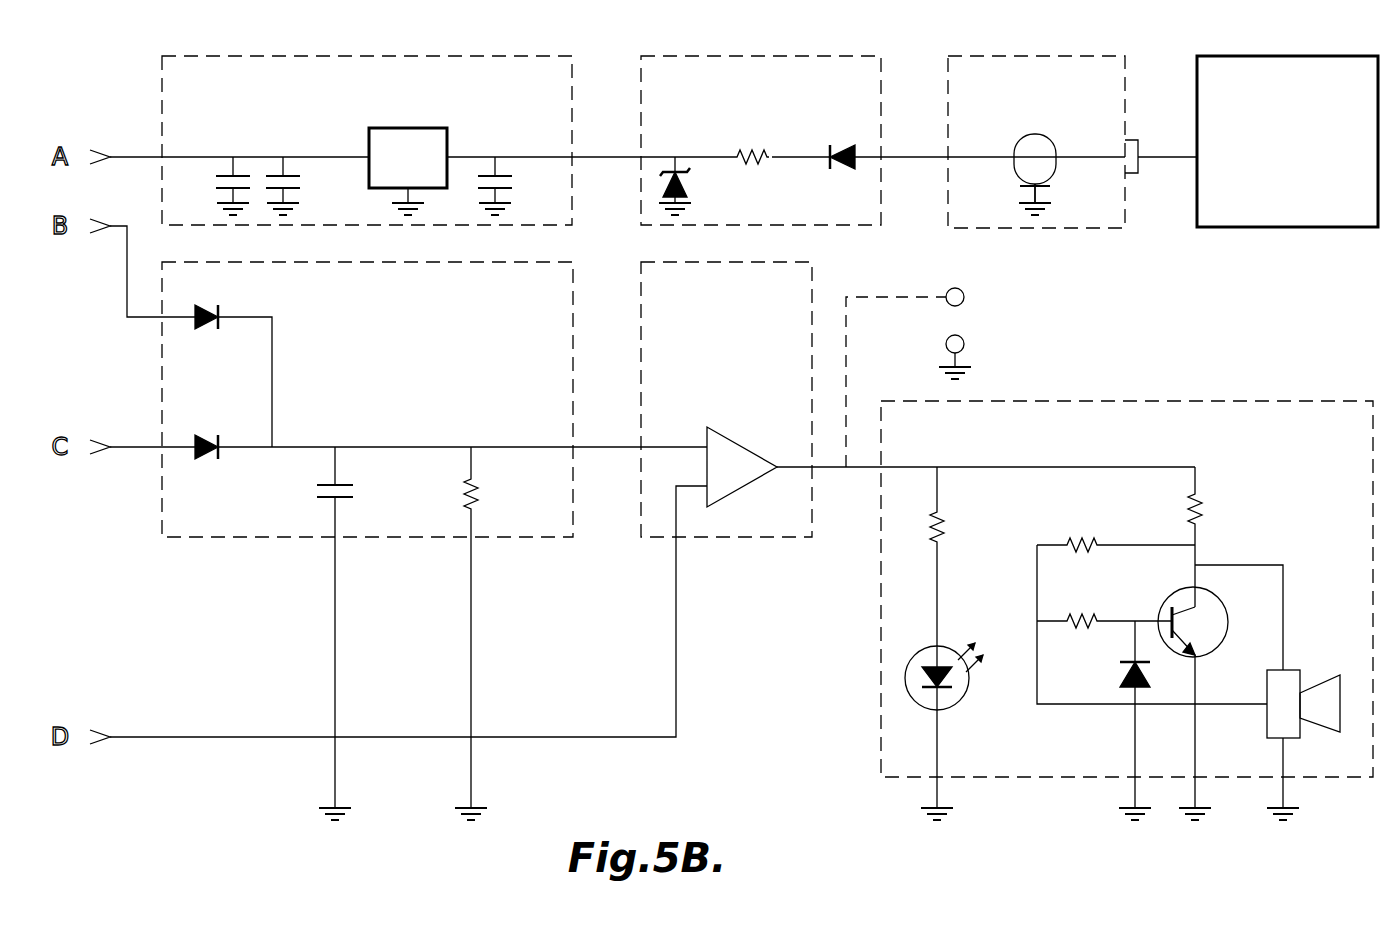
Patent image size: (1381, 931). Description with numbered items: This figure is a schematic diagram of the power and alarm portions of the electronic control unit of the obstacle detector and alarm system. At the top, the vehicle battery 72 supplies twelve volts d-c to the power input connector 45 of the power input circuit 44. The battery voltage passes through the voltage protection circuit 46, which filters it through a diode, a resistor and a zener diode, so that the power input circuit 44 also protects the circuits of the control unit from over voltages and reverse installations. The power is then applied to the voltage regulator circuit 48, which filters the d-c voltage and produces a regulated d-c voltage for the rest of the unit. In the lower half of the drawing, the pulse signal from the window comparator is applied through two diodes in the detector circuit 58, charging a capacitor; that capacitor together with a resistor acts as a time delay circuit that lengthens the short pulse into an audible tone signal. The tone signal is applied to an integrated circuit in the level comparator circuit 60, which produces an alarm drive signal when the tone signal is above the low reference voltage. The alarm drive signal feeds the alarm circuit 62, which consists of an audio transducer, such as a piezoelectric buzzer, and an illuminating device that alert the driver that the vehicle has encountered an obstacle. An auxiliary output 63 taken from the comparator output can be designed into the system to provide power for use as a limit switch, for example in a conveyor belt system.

The voltage regulator circuit 48 is at (367, 140).
The voltage protection circuit 46 is at (761, 140).
The power input circuit 44 is at (1036, 142).
The power input connector 45 is at (1161, 203).
The vehicle battery 72 is at (1287, 141).
The detector circuit 58 is at (367, 399).
The level comparator circuit 60 is at (726, 399).
The auxiliary output 63 is at (1059, 377).
The alarm circuit 62 is at (1127, 589).